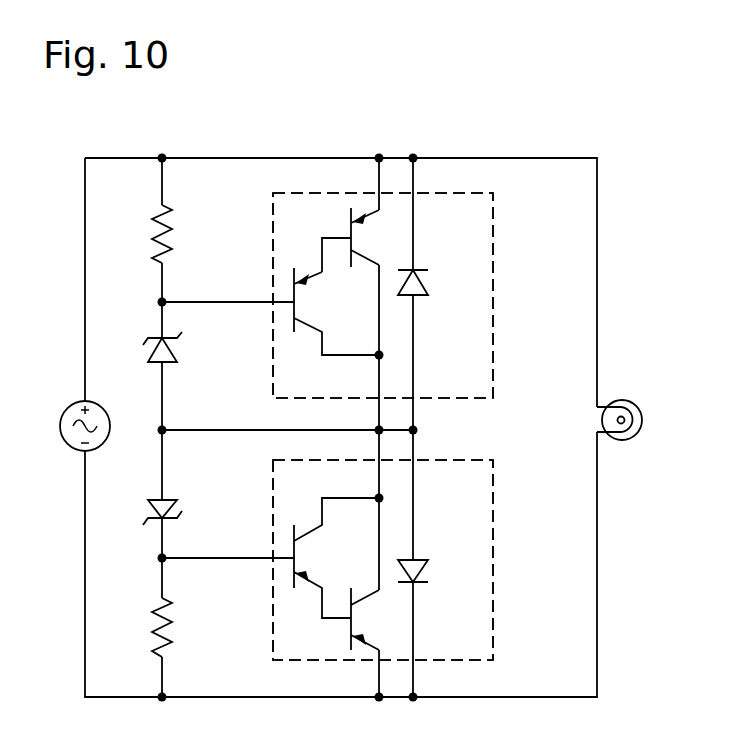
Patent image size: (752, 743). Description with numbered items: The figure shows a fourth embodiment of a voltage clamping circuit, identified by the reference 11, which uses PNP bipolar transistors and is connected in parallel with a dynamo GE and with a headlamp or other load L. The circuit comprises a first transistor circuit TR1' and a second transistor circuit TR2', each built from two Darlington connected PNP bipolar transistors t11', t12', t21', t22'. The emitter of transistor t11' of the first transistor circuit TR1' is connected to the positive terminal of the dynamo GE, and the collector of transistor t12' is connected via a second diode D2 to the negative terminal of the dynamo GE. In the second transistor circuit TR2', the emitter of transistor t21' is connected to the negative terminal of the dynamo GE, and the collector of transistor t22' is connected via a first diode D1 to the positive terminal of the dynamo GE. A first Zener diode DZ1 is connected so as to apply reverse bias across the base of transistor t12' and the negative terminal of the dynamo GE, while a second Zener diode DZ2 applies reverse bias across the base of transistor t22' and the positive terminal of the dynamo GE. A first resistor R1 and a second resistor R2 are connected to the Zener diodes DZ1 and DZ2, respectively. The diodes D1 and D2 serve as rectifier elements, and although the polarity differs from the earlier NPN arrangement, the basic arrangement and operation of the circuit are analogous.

The switching device 11 is at (458, 132).
The first resistor R1 is at (186, 234).
The second resistor R2 is at (186, 627).
The first Zener diode DZ1 is at (191, 350).
The second Zener diode DZ2 is at (191, 511).
The first diode D1 is at (437, 284).
The second diode D2 is at (437, 573).
The first transistor circuit TR1' is at (383, 295).
The second transistor circuit TR2' is at (383, 560).
The transistor t11' is at (336, 234).
The transistor t12' is at (336, 311).
The transistor t21' is at (335, 621).
The transistor t22' is at (336, 558).
The dynamo GE is at (70, 445).
The load L is at (626, 434).